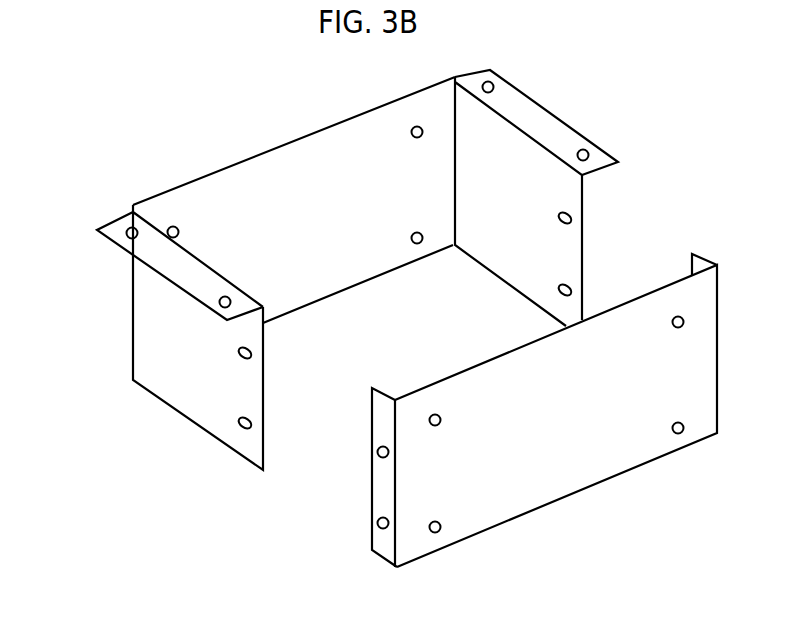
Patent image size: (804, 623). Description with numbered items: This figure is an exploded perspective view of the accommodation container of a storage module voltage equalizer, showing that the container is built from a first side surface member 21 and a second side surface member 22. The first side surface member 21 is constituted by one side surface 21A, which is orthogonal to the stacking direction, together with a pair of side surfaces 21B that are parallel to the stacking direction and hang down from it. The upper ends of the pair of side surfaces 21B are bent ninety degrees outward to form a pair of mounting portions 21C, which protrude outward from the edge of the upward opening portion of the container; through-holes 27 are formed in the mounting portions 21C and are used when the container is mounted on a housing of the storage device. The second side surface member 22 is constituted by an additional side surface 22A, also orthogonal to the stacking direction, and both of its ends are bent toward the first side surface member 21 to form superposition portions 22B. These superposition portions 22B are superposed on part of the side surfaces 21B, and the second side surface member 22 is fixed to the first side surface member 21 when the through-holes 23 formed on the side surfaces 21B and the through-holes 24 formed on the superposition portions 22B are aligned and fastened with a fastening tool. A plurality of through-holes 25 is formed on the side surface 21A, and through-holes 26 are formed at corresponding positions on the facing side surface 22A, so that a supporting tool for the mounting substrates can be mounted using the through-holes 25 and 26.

The first side surface member 21 is at (336, 279).
The side surface 21A is at (303, 137).
The side surfaces 21B is at (157, 345).
The mounting portions 21C is at (107, 237).
The second side surface member 22 is at (488, 418).
The side surface 22A is at (568, 468).
The superposition portions 22B is at (370, 498).
The through-holes 23 is at (237, 437).
The through-holes 24 is at (373, 527).
The through-holes 25 is at (410, 125).
The through-holes 26 is at (440, 533).
The through-holes 27 is at (125, 230).